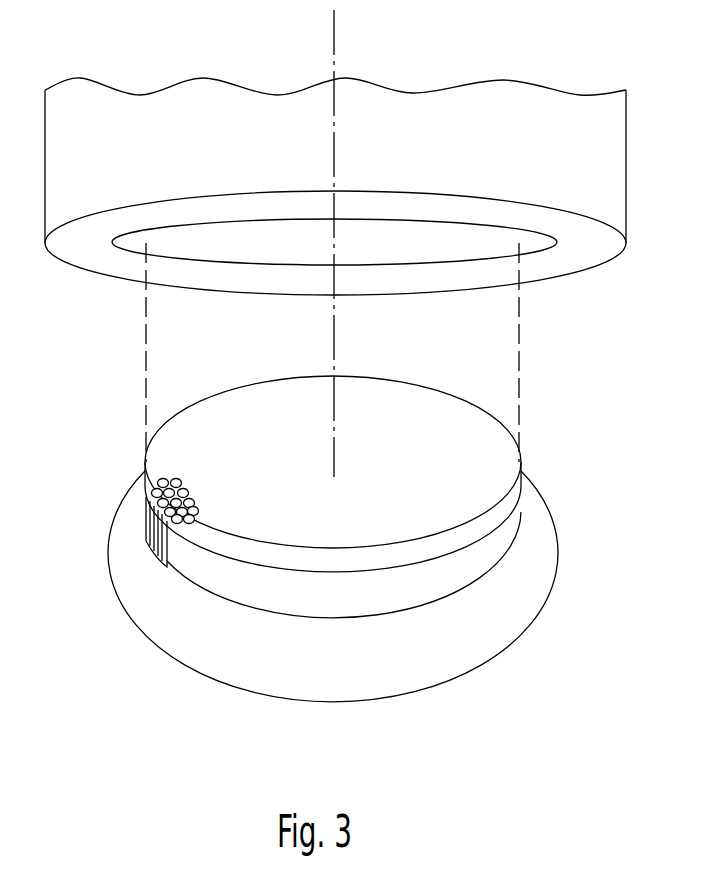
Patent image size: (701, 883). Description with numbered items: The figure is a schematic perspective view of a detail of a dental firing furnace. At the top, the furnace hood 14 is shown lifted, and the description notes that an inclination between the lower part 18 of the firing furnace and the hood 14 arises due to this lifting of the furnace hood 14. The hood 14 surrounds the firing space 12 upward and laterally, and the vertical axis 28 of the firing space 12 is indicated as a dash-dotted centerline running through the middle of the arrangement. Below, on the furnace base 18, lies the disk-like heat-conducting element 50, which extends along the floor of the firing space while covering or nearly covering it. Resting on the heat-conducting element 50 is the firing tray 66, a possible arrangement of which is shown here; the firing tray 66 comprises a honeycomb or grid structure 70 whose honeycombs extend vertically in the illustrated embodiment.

The firing space 12 is at (234, 242).
The furnace hood 14 is at (383, 208).
The furnace base 18 is at (316, 552).
The axis 28 is at (334, 33).
The heat-conducting element 50 is at (468, 637).
The firing tray 66 is at (470, 472).
The honeycomb or grid structure 70 is at (147, 497).